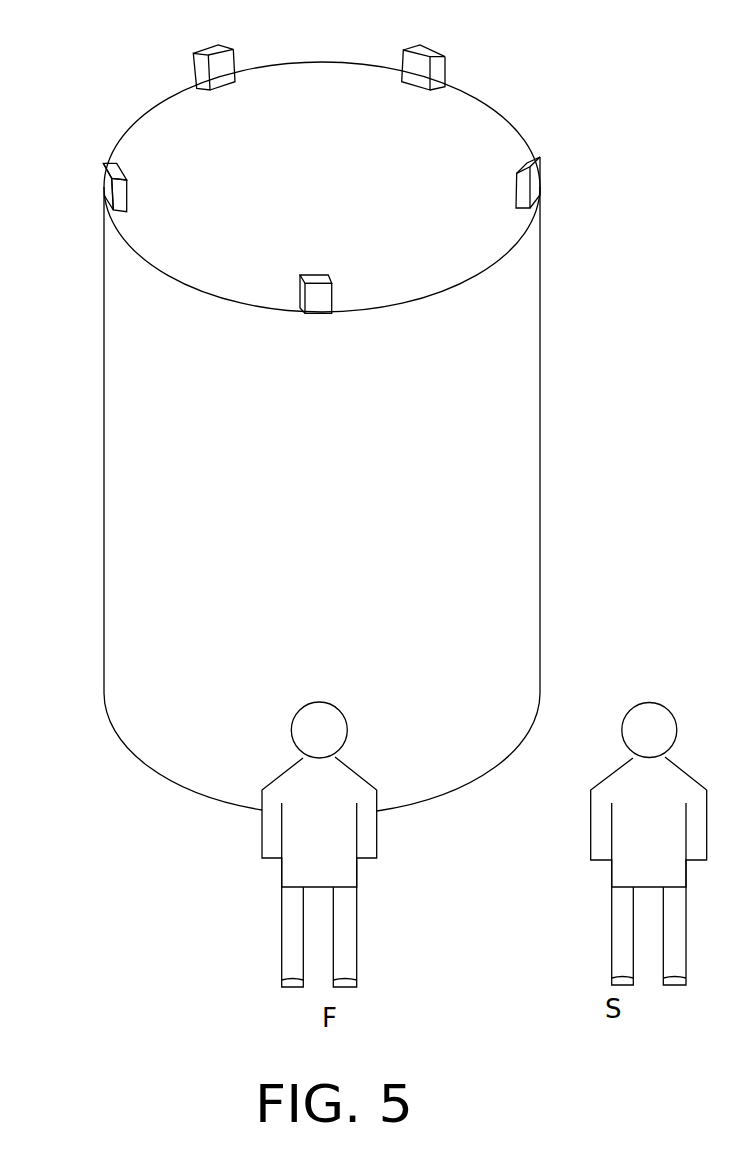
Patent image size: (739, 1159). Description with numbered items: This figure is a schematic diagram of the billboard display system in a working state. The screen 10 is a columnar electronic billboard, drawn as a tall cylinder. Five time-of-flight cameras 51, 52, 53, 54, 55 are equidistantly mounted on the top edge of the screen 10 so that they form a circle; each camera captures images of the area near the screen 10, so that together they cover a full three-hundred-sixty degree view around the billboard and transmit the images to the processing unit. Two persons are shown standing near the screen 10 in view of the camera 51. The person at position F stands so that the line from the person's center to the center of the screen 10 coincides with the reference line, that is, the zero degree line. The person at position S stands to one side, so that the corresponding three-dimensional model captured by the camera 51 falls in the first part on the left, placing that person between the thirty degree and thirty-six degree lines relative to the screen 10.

The screen 10 is at (473, 487).
The time-of-flight camera 51 is at (327, 277).
The time-of-flight camera 52 is at (540, 162).
The time-of-flight camera 53 is at (430, 46).
The time-of-flight camera 54 is at (207, 50).
The time-of-flight camera 55 is at (103, 167).